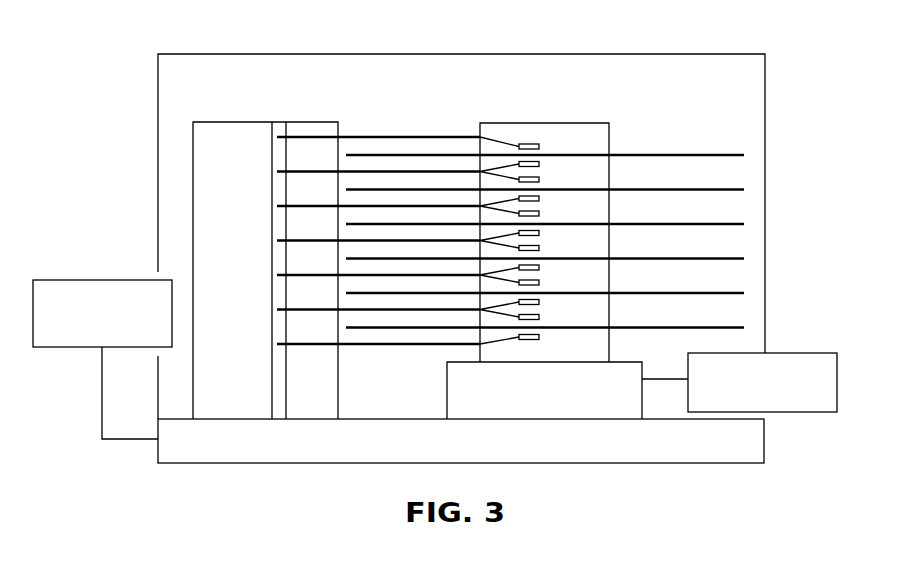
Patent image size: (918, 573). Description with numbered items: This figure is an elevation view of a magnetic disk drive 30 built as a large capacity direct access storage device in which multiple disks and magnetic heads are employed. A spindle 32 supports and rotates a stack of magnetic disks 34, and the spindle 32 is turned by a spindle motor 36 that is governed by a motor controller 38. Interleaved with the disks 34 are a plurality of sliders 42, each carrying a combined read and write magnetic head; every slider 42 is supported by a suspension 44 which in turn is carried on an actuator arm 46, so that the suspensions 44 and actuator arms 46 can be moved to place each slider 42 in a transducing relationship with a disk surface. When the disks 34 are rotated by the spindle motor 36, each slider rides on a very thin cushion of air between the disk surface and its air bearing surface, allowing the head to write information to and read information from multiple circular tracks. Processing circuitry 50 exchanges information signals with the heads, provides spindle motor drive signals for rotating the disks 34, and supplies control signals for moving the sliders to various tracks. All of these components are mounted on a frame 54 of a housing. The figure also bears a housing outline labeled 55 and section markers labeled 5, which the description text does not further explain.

The disk drive 30 is at (656, 129).
The head stack assembly 32 is at (599, 123).
The disks 34 is at (733, 157).
The spindle motor 36 is at (533, 402).
The motor controller 38 is at (797, 412).
The read/write heads 42 is at (540, 163).
The suspensions 44 is at (513, 172).
The actuator arms 46 is at (448, 172).
The processing circuitry 50 is at (75, 280).
The base plate 54 is at (207, 458).
The housing 55 is at (707, 55).
The section line 5- 5 is at (247, 8).